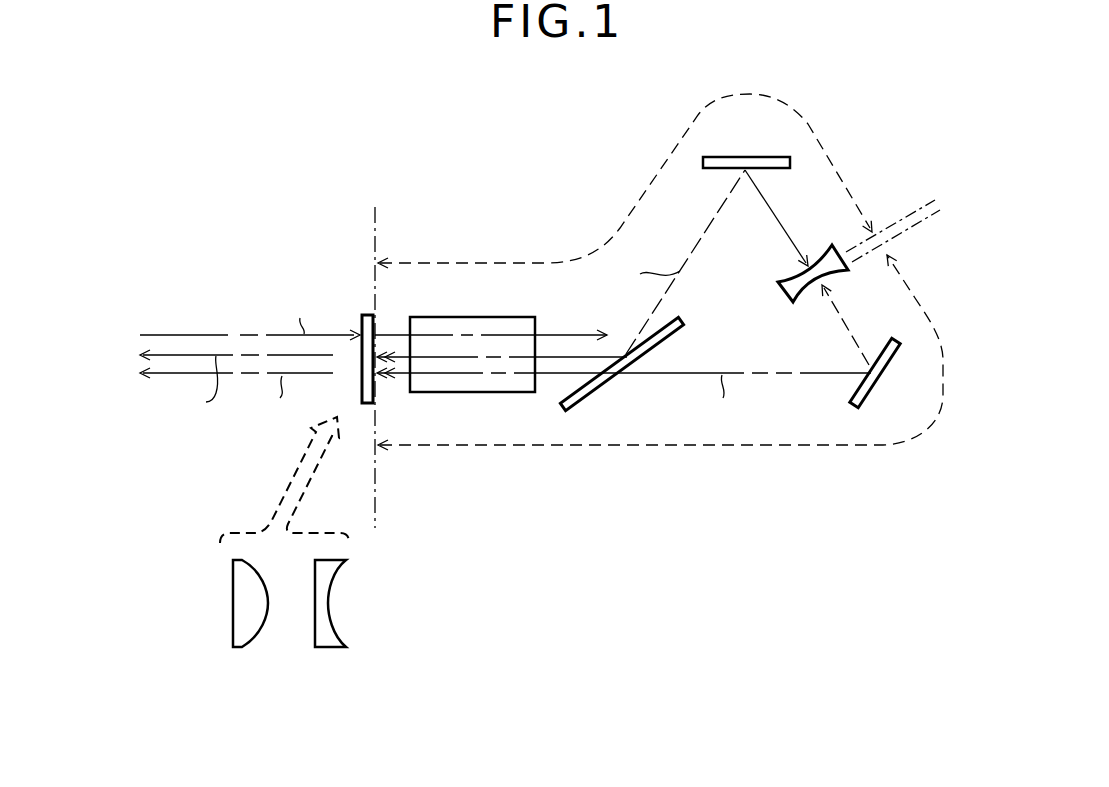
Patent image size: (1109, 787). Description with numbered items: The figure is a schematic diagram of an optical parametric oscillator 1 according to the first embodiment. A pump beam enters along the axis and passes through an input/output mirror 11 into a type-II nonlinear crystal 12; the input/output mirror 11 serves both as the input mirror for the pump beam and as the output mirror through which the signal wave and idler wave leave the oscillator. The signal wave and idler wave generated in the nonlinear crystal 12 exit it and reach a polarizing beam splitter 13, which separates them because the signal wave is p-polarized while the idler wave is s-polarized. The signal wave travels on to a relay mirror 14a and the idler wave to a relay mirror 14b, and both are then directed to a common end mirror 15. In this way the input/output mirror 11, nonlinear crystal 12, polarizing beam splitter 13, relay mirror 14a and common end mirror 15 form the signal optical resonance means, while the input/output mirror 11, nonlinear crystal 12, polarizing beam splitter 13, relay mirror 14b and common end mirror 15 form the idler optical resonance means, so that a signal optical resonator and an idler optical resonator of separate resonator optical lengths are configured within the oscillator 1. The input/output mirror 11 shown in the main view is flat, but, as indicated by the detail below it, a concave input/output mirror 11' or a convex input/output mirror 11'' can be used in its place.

The optical parametric oscillator 1 is at (331, 251).
The input/output mirror 11 is at (401, 344).
The concave input/output mirror 11' is at (368, 603).
The convex input/output mirror 11'' is at (213, 603).
The type-II nonlinear crystal 12 is at (517, 317).
The polarizing beam splitter 13 is at (600, 388).
The relay mirror 14a is at (857, 388).
The relay mirror 14b is at (722, 168).
The common end mirror 15 is at (779, 290).